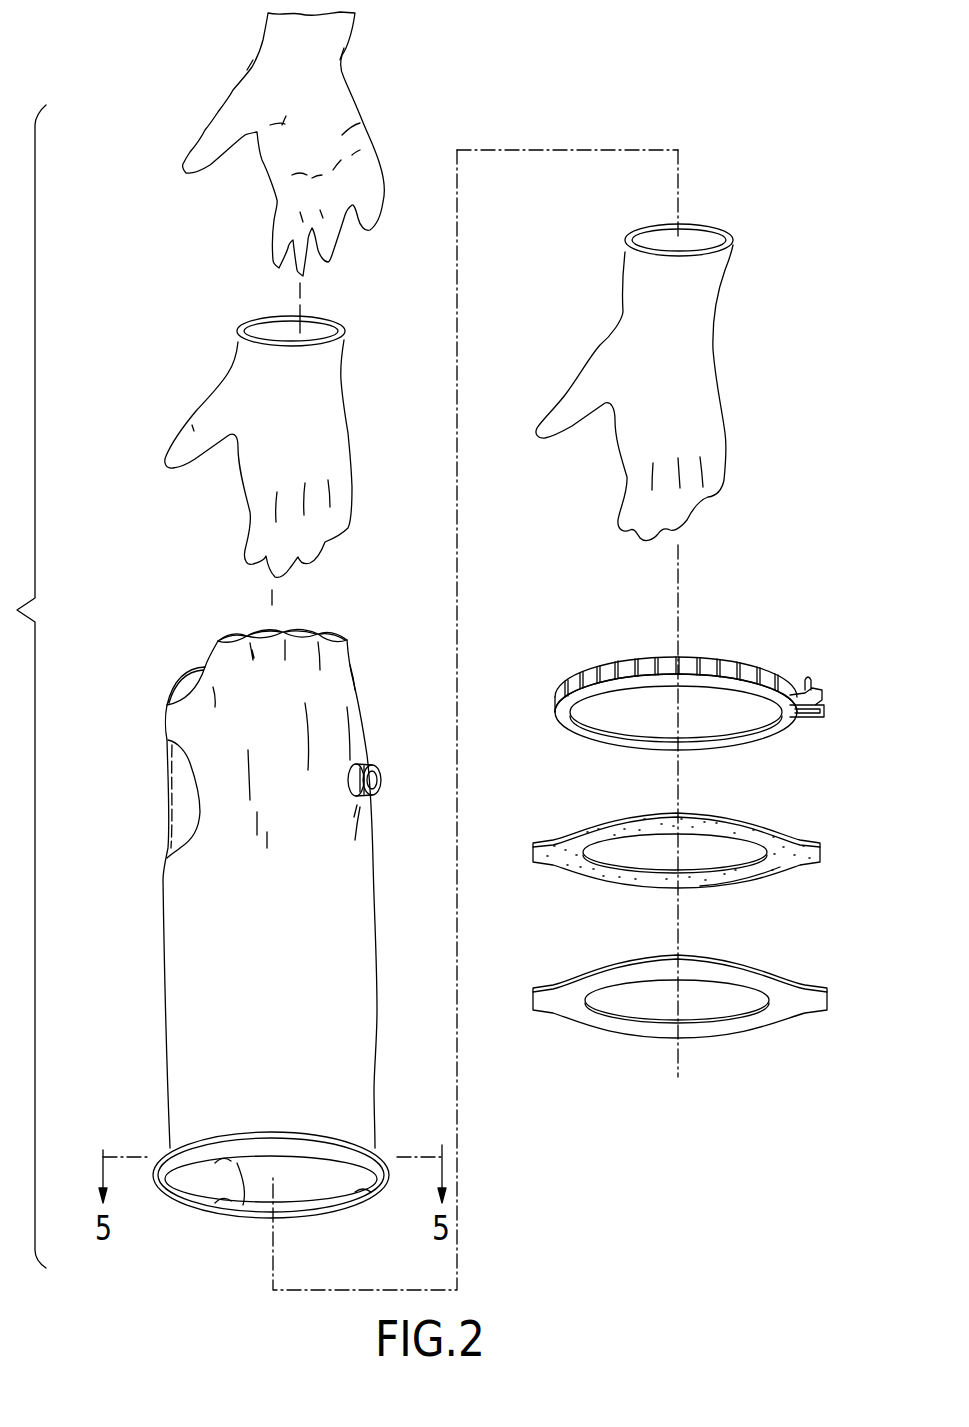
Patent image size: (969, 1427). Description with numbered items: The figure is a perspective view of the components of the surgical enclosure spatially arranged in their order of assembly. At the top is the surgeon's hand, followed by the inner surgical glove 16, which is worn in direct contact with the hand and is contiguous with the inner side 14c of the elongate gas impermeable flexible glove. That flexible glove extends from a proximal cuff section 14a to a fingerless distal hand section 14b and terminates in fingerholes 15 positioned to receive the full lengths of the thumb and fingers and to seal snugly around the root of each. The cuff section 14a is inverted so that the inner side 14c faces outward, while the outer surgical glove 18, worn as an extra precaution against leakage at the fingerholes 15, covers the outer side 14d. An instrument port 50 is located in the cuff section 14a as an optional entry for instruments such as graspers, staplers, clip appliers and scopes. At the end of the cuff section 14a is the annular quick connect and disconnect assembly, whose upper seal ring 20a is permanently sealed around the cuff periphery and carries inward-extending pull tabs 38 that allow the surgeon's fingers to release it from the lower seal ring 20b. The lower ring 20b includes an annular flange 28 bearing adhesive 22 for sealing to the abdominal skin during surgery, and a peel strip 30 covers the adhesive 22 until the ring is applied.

The cuff section 14a is at (190, 1090).
The hand section 14b is at (227, 668).
The inner side 14c is at (340, 683).
The outer side 14d is at (182, 792).
The fingerholes 15 is at (330, 632).
The inner surgical glove 16 is at (227, 400).
The outer surgical glove 18 is at (690, 380).
The upper seal ring 20a is at (237, 1140).
The lower seal ring 20b is at (720, 663).
The adhesive 22 is at (757, 870).
The annular flange 28 is at (733, 810).
The peel strip 30 is at (770, 1015).
The pull tabs 38 is at (243, 1205).
The instrument port 50 is at (377, 768).